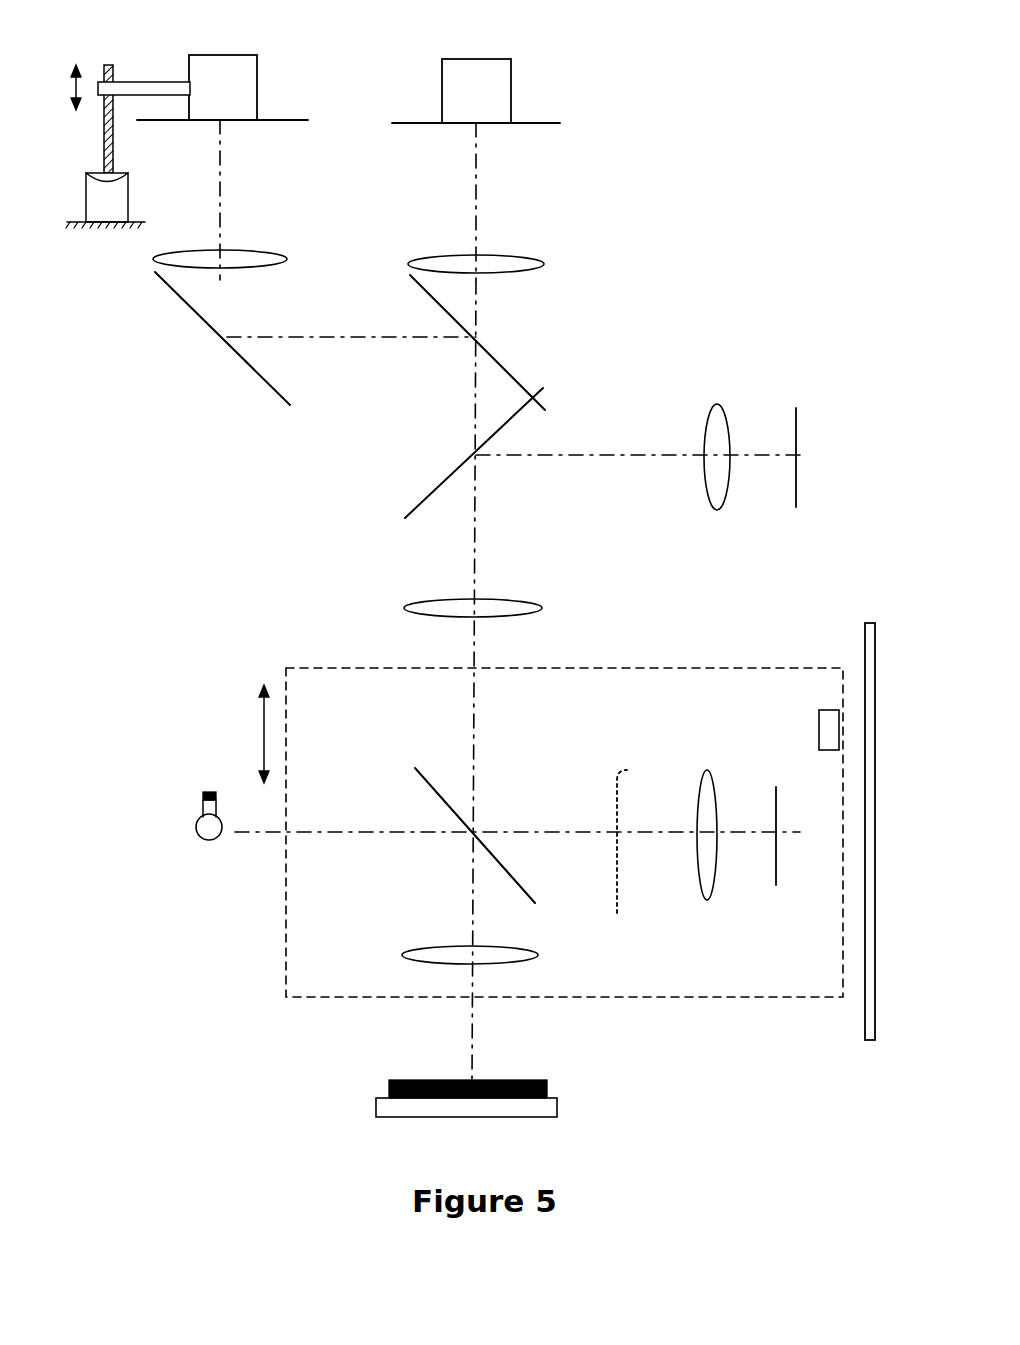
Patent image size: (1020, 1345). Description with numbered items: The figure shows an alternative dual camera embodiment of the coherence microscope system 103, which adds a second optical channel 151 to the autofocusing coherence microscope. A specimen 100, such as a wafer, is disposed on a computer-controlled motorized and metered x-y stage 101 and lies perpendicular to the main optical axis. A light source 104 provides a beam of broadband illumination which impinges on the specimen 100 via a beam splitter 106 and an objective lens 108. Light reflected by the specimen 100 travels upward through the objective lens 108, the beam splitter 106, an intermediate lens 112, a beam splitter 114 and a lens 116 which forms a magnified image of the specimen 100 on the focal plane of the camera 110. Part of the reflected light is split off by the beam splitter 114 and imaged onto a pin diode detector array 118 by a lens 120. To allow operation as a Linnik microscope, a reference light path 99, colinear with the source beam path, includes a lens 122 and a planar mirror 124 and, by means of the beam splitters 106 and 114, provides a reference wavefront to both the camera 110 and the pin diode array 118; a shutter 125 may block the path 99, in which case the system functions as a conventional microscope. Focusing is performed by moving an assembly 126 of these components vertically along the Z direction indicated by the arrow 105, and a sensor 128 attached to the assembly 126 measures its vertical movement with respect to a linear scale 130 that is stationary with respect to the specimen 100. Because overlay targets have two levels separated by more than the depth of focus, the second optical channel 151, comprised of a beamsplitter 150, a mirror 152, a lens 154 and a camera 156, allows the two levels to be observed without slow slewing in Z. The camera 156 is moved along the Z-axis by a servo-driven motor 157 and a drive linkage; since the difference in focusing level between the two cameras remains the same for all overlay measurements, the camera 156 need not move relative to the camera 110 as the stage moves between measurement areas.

The reference light path 99 is at (493, 829).
The specimen 100 is at (512, 1080).
The x-y stage 101 is at (552, 1105).
The coherence microscope system 103 is at (408, 566).
The light source 104 is at (197, 820).
The arrow 105 is at (262, 742).
The beam splitter 106 is at (418, 770).
The objective lens 108 is at (530, 952).
The camera 110 is at (497, 92).
The intermediate lens 112 is at (502, 617).
The beam splitter 114 is at (450, 468).
The lens 116 is at (505, 255).
The pin diode detector array 118 is at (797, 444).
The lens 120 is at (720, 405).
The lens 122 is at (718, 785).
The planar mirror 124 is at (778, 847).
The shutter 125 is at (642, 831).
The assembly 126 is at (686, 669).
The sensor 128 is at (817, 725).
The linear scale 130 is at (877, 705).
The beamsplitter 150 is at (495, 360).
The second optical channel 151 is at (200, 371).
The mirror 152 is at (275, 392).
The lens 154 is at (270, 252).
The camera 156 is at (257, 87).
The servo-driven motor 157 is at (111, 207).